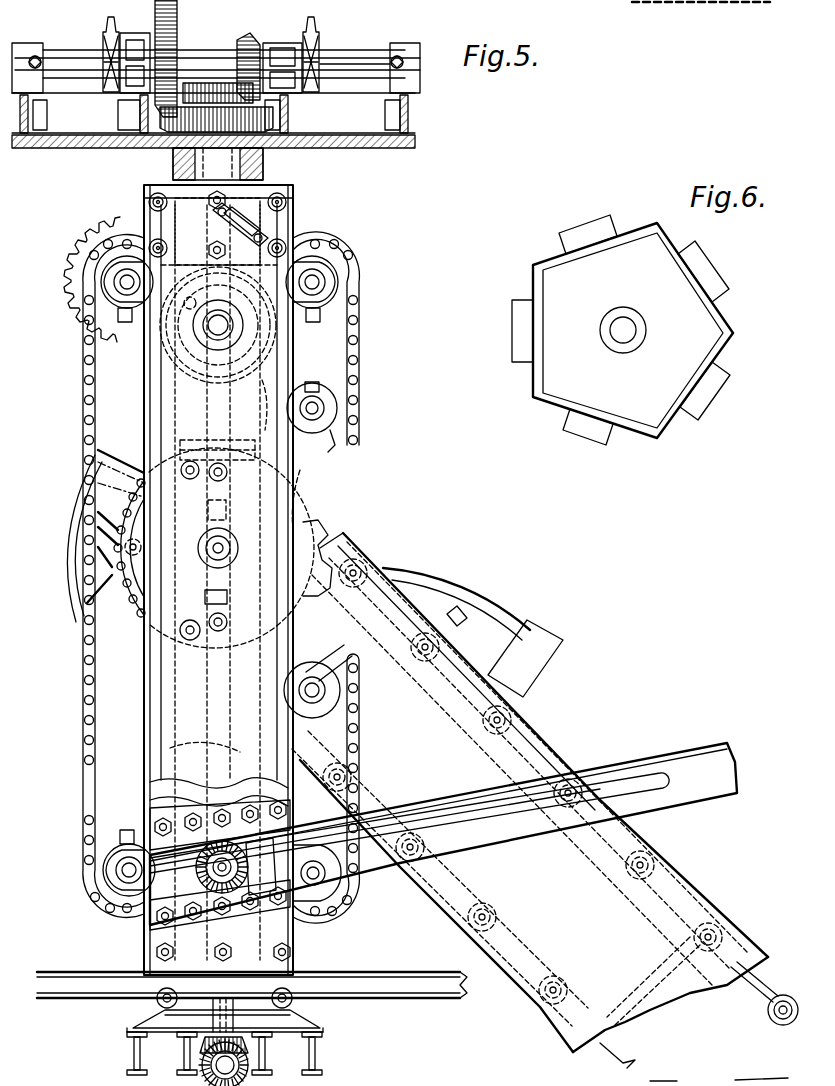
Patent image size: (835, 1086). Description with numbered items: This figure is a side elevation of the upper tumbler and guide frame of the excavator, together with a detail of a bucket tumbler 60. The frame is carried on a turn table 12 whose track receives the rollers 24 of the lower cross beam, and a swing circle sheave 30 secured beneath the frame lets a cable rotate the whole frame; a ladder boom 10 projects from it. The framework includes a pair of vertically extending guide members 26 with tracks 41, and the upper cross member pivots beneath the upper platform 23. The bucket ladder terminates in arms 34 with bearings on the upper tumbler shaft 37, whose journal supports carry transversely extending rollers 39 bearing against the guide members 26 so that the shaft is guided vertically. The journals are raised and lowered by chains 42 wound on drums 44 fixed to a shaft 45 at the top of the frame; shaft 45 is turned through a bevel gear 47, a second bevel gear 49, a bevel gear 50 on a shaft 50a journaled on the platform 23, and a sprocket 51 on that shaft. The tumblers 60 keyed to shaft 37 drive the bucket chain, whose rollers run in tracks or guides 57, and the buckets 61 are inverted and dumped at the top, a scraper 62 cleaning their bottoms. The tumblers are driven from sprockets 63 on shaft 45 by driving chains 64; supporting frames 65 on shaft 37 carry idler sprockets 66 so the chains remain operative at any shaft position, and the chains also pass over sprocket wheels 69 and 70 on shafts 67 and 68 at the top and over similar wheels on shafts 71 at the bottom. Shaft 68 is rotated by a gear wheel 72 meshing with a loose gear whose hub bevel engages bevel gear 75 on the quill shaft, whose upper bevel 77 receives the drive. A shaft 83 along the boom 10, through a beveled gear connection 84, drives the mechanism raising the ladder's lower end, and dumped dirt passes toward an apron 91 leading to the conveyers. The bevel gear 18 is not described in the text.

In FIG. 5, the ladder boom 10 is at (683, 765).
In FIG. 5, the turn table 12 is at (109, 25).
In FIG. 5, the bevel gear 18 is at (172, 27).
In FIG. 5, the upper platform 23 is at (365, 135).
In FIG. 5, the rollers 24 is at (167, 1015).
In FIG. 5, the guide members 26 is at (160, 725).
In FIG. 5, the swing circle sheave 30 is at (443, 990).
In FIG. 5, the arms 34 is at (323, 543).
In FIG. 5, the upper tumbler shaft 37 is at (352, 534).
In FIG. 5, the transversely extending rollers 39 is at (223, 440).
In FIG. 5, the tracks 41 is at (193, 428).
In FIG. 5, the chains 42 is at (270, 400).
In FIG. 5, the drums 44 is at (260, 332).
In FIG. 5, the shaft 45 is at (216, 327).
In FIG. 5, the bevel gear 47 is at (188, 304).
In FIG. 5, the second bevel gear 49 is at (198, 82).
In FIG. 5, the bevel gear 50 is at (248, 37).
In FIG. 5, the shaft 50a is at (343, 48).
In FIG. 5, the sprocket 51 is at (313, 26).
In FIG. 5, the tracks or guides 57 is at (623, 913).
In FIG. 5, the tumblers 60 is at (292, 500).
In FIG. 6, the tumblers 60 is at (700, 328).
In FIG. 5, the buckets 61 is at (73, 563).
In FIG. 5, the scraper 62 is at (140, 610).
In FIG. 5, the sprockets 63 is at (303, 512).
In FIG. 5, the driving chains 64 is at (358, 354).
In FIG. 5, the supporting frames 65 is at (325, 455).
In FIG. 5, the idler sprockets 66 is at (335, 401).
In FIG. 5, the shaft 67 is at (315, 282).
In FIG. 5, the shaft 68 is at (124, 283).
In FIG. 5, the sprocket wheel 69 is at (321, 248).
In FIG. 5, the sprocket wheel 70 is at (110, 294).
In FIG. 5, the shafts 71 is at (127, 872).
In FIG. 5, the gear wheel 72 is at (98, 237).
In FIG. 5, the bevel gear 75 is at (293, 240).
In FIG. 5, the bevel 77 is at (277, 118).
In FIG. 5, the shaft 83 is at (623, 782).
In FIG. 5, the beveled gear connection 84 is at (310, 920).
In FIG. 5, the apron 91 is at (355, 918).